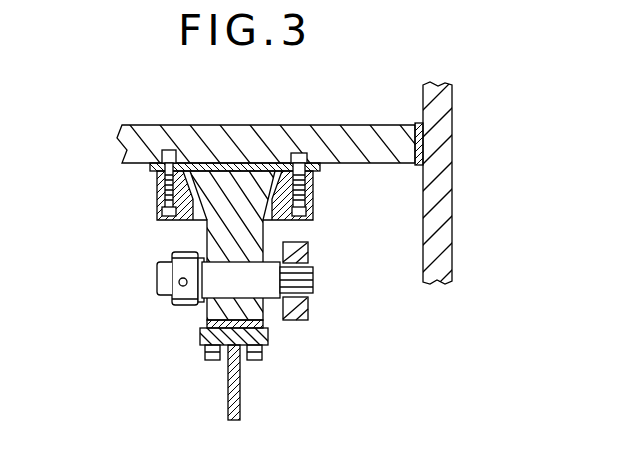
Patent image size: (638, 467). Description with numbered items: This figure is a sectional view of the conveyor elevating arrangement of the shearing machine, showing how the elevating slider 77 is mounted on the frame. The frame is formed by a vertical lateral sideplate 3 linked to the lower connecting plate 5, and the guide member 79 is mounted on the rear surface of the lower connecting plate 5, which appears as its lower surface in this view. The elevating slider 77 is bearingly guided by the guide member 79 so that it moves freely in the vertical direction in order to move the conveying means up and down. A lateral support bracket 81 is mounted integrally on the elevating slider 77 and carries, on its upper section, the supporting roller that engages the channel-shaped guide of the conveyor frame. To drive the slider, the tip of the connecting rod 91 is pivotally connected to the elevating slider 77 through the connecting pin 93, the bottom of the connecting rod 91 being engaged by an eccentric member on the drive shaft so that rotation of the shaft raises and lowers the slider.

The vertical lateral sideplate 3 is at (452, 192).
The lower connecting plate 5 is at (258, 132).
The elevating slider 77 is at (207, 236).
The guide member 79 is at (157, 189).
The lateral support bracket 81 is at (200, 340).
The connecting rod 91 is at (302, 321).
The connecting pin 93 is at (316, 278).